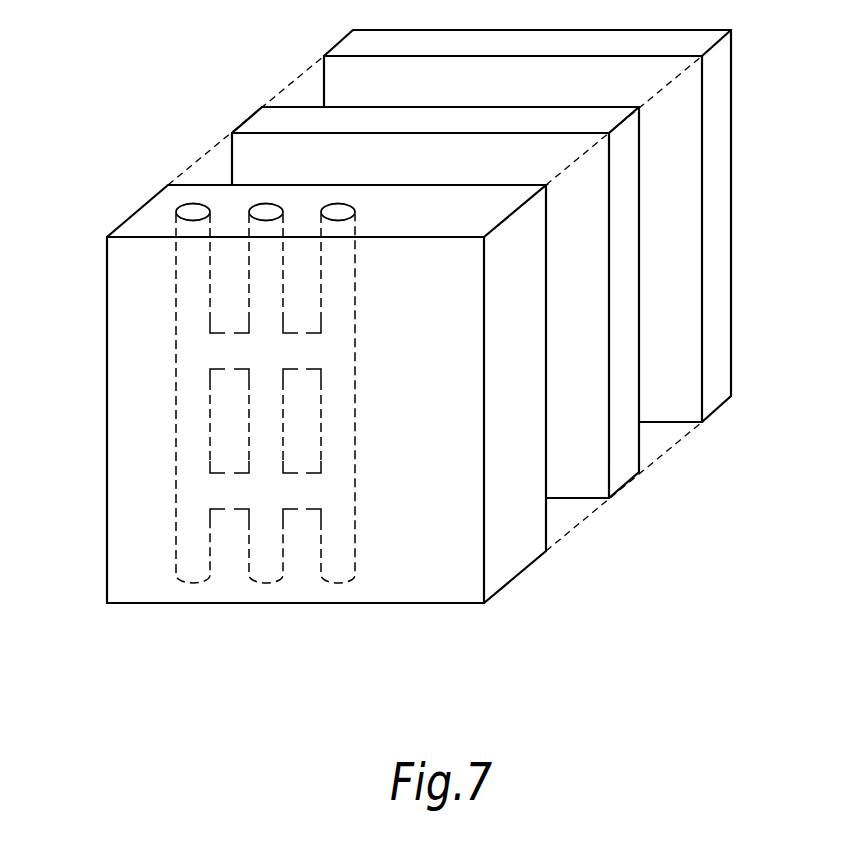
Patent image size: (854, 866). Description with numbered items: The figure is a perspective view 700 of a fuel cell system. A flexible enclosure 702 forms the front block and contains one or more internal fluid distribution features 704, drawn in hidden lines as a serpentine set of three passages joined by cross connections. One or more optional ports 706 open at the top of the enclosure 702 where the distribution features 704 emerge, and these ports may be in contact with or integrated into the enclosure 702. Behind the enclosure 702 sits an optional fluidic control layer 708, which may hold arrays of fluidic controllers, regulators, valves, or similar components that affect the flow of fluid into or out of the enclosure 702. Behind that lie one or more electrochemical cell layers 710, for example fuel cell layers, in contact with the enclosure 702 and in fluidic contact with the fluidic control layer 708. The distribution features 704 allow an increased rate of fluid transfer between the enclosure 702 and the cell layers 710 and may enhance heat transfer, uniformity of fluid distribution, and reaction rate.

The perspective view 700 is at (117, 53).
The flexible enclosure 702 is at (530, 541).
The internal fluid distribution features 704 is at (336, 579).
The ports 706 is at (183, 206).
The fluidic control layer 708 is at (622, 402).
The electrochemical cell layers 710 is at (722, 148).